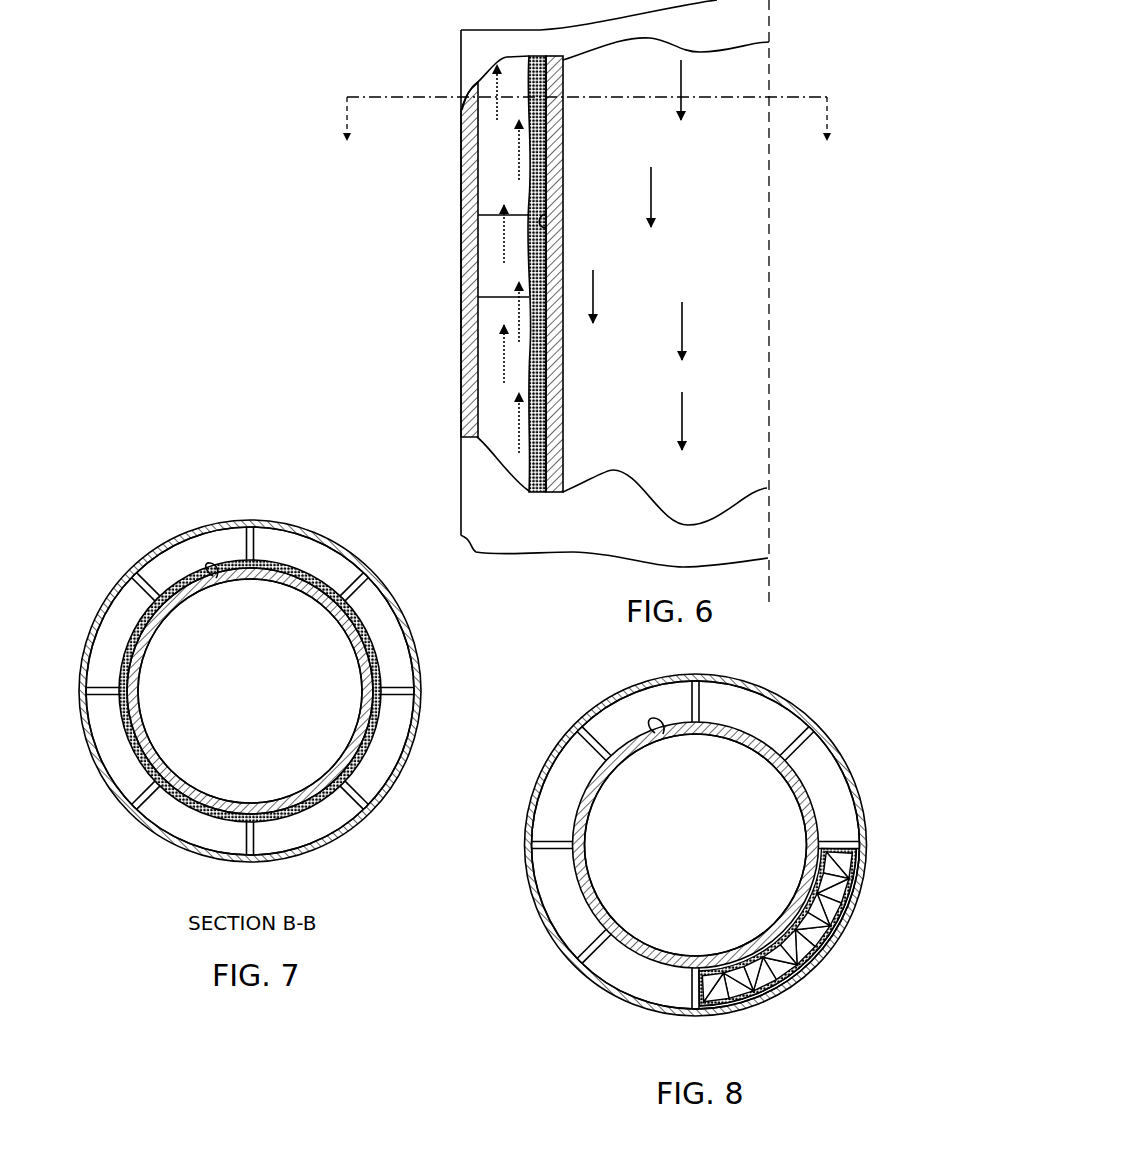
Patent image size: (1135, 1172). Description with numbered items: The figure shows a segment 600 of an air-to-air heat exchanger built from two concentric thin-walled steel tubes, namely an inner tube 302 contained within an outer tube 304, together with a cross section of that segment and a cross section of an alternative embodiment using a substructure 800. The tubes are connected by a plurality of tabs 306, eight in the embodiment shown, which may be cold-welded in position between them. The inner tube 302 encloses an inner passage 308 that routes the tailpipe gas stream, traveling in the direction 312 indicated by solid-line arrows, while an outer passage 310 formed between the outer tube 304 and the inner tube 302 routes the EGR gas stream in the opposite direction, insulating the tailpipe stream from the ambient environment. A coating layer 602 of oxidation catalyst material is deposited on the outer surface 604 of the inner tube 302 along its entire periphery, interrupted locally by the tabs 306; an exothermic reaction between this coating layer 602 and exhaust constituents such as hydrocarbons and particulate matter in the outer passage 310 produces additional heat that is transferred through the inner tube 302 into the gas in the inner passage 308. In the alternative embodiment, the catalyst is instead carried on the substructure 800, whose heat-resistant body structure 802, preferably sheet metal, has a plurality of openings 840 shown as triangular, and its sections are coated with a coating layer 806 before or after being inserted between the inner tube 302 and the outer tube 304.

In FIG. 6, the inner tube 302 is at (558, 132).
In FIG. 7, the inner tube 302 is at (162, 607).
In FIG. 8, the inner tube 302 is at (610, 770).
In FIG. 7, the outer tube 304 is at (407, 762).
In FIG. 8, the outer tube 304 is at (637, 1003).
In FIG. 6, the tabs 306 is at (497, 278).
In FIG. 7, the tabs 306 is at (388, 672).
In FIG. 8, the tabs 306 is at (833, 832).
In FIG. 6, the inner passage 308 is at (717, 418).
In FIG. 7, the inner passage 308 is at (163, 707).
In FIG. 8, the inner passage 308 is at (615, 862).
In FIG. 6, the outer passage 310 is at (493, 142).
In FIG. 7, the outer passage 310 is at (128, 767).
In FIG. 8, the outer passage 310 is at (575, 920).
In FIG. 6, the direction 312 is at (651, 187).
In FIG. 6, the segment 600 is at (309, 419).
In FIG. 6, the coating layer 602 is at (535, 343).
In FIG. 7, the coating layer 602 is at (300, 813).
In FIG. 6, the outer surface 604 is at (547, 226).
In FIG. 7, the outer surface 604 is at (222, 580).
In FIG. 8, the outer surface 604 is at (665, 735).
In FIG. 8, the substructure 800 is at (540, 1049).
In FIG. 8, the body structure 802 is at (805, 944).
In FIG. 8, the coating layer 806 is at (742, 997).
In FIG. 8, the openings 840 is at (803, 970).